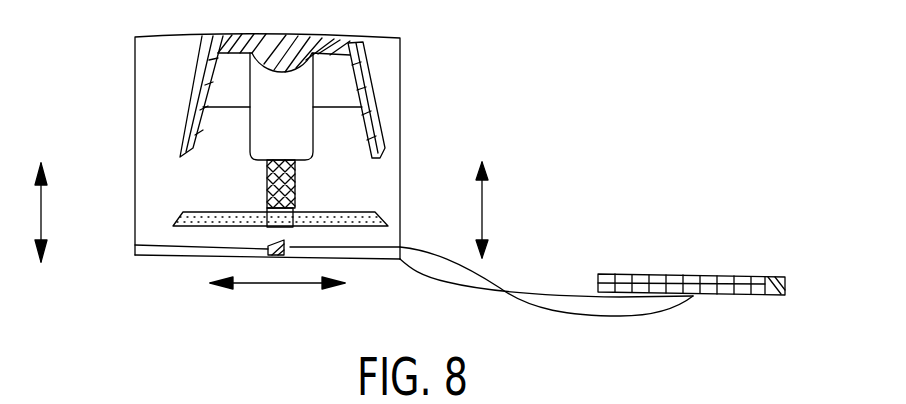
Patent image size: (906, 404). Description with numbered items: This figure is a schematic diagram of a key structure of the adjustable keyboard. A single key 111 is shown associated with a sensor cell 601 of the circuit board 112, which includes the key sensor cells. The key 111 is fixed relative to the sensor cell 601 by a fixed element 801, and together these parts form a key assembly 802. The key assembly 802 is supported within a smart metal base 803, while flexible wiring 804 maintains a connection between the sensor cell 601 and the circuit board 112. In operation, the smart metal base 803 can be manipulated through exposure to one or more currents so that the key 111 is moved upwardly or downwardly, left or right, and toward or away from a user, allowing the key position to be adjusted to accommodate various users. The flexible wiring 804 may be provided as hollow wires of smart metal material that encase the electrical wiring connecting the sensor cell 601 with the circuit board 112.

The key assembly 802 is at (135, 70).
The key 111 is at (297, 77).
The fixed element 801 is at (263, 178).
The sensor cell 601 is at (293, 233).
The smart metal base 803 is at (483, 200).
The flexible wiring 804 is at (560, 310).
The circuit board 112 is at (727, 282).